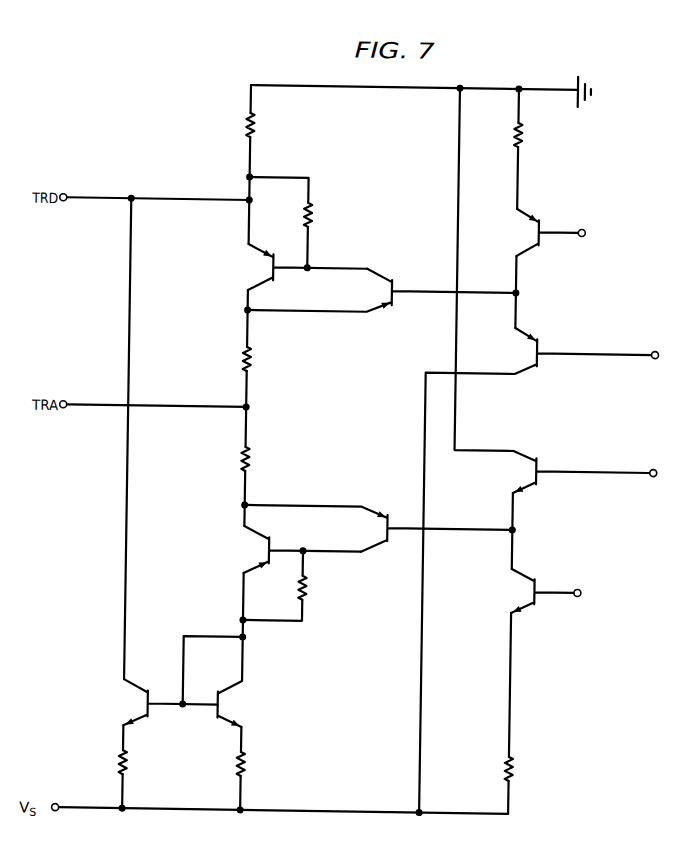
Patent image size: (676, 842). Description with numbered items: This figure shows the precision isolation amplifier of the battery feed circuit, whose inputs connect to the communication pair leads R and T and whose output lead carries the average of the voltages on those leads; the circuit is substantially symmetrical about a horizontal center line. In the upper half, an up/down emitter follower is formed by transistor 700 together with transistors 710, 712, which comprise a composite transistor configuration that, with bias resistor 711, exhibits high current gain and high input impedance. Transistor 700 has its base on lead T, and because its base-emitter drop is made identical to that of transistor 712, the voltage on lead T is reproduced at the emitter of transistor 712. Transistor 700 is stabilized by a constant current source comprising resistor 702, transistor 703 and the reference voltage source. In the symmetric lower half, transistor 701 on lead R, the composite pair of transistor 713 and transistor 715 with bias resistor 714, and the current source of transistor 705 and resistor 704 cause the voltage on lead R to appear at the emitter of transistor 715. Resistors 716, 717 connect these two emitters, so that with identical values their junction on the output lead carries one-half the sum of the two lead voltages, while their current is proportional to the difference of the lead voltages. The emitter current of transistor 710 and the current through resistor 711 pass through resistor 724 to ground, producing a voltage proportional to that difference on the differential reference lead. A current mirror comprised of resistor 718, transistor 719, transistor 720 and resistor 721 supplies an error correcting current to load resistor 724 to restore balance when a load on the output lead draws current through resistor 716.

The transistor 700 is at (534, 362).
The transistor 701 is at (534, 481).
The resistor 702 is at (533, 135).
The transistor 703 is at (533, 245).
The resistor 704 is at (523, 769).
The transistor 705 is at (532, 605).
The transistor 710 is at (270, 278).
The bias resistor 711 is at (323, 215).
The transistor 712 is at (388, 300).
The transistor 713 is at (268, 559).
The bias resistor 714 is at (316, 588).
The transistor 715 is at (386, 538).
The resistor 716 is at (262, 359).
The resistor 717 is at (260, 459).
The resistor 718 is at (256, 764).
The transistor 719 is at (238, 719).
The transistor 720 is at (147, 715).
The resistor 721 is at (109, 762).
The resistor 724 is at (237, 125).